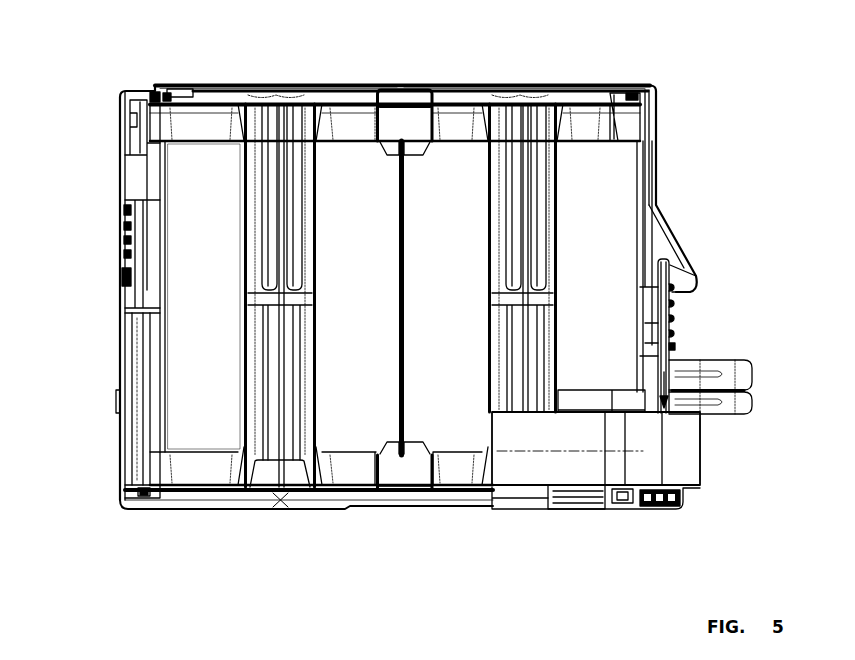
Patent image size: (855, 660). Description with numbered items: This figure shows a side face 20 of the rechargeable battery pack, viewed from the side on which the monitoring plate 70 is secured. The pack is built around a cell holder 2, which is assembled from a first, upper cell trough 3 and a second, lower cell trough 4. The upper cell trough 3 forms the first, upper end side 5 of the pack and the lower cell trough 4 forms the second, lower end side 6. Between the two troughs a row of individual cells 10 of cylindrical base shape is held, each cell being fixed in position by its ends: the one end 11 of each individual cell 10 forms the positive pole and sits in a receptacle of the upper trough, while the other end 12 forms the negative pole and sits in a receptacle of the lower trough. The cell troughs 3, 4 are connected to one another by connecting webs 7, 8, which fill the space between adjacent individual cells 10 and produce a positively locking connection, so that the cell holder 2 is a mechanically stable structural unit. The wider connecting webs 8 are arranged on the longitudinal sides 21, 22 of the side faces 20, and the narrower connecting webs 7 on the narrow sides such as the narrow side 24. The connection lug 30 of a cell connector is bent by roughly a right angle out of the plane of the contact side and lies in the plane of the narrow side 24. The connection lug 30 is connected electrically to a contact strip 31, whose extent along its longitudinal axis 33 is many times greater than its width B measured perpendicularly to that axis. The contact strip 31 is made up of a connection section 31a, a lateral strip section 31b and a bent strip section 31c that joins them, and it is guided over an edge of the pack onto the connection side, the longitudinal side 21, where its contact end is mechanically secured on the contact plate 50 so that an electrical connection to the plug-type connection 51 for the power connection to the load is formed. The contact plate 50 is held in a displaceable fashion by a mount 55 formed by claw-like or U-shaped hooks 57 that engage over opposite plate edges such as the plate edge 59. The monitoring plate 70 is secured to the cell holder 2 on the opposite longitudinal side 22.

The cell holder 2 is at (283, 103).
The first, upper cell trough 3 is at (456, 112).
The second, lower cell trough 4 is at (448, 478).
The first, upper end side 5 is at (391, 82).
The second, lower end side 6 is at (370, 510).
The connecting web 7 is at (286, 172).
The connecting web 8 is at (657, 173).
The individual cell 10 is at (195, 262).
The one end of the individual cell 11 is at (157, 99).
The other end of the individual cell 12 is at (152, 491).
The side face 20 is at (224, 80).
The longitudinal side 21 is at (648, 196).
The longitudinal side 22 is at (122, 352).
The narrow side 24 is at (200, 193).
The connection lug 30 is at (515, 502).
The contact strip 31 is at (691, 488).
The connection section 31a is at (702, 450).
The lateral strip section 31b is at (584, 468).
The bent strip section 31c is at (683, 464).
The longitudinal axis 33 is at (530, 452).
The contact plate 50 is at (667, 353).
The plug-type connection 51 is at (740, 400).
The mount 55 is at (683, 233).
The hook 57 is at (688, 268).
The plate edge 59 is at (670, 272).
The monitoring plate 70 is at (138, 241).
The width B is at (664, 490).